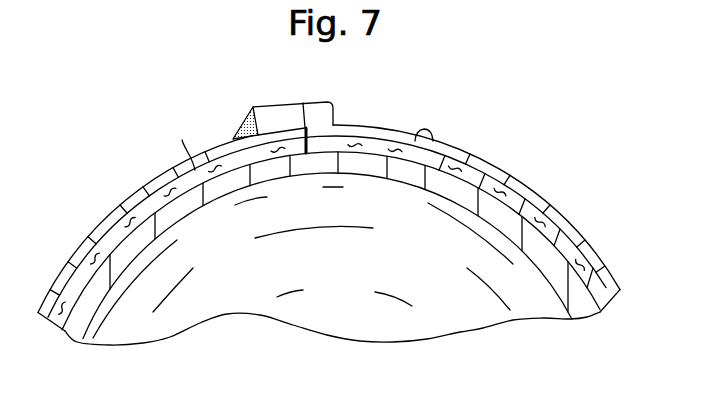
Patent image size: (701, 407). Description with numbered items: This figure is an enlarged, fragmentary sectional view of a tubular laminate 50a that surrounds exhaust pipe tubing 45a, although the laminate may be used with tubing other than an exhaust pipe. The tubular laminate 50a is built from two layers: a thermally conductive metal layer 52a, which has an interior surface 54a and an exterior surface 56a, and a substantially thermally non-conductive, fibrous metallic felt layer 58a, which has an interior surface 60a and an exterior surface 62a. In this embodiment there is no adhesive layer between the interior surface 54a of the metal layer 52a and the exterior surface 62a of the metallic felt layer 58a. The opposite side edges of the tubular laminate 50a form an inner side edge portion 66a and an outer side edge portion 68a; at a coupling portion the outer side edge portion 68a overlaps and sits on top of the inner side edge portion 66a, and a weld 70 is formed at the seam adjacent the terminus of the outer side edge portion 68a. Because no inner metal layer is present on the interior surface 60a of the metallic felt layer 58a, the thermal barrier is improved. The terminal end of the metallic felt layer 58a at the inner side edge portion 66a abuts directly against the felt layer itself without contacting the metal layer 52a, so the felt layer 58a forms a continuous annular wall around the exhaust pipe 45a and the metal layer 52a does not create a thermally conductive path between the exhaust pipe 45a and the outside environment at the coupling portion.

The tubular laminate 50a is at (108, 128).
The thermally conductive metal layer 52a is at (392, 128).
The interior surface of metal layer 54a is at (182, 145).
The exterior surface of metal layer 56a is at (533, 190).
The fibrous metallic felt layer 58a is at (465, 160).
The interior surface of metallic felt layer 60a is at (135, 238).
The exterior surface of metallic felt layer 62a is at (418, 135).
The inner side edge portion 66a is at (288, 140).
The outer side edge portion 68a is at (284, 121).
The weld 70 is at (247, 112).
The exhaust pipe tubing 45a is at (191, 206).